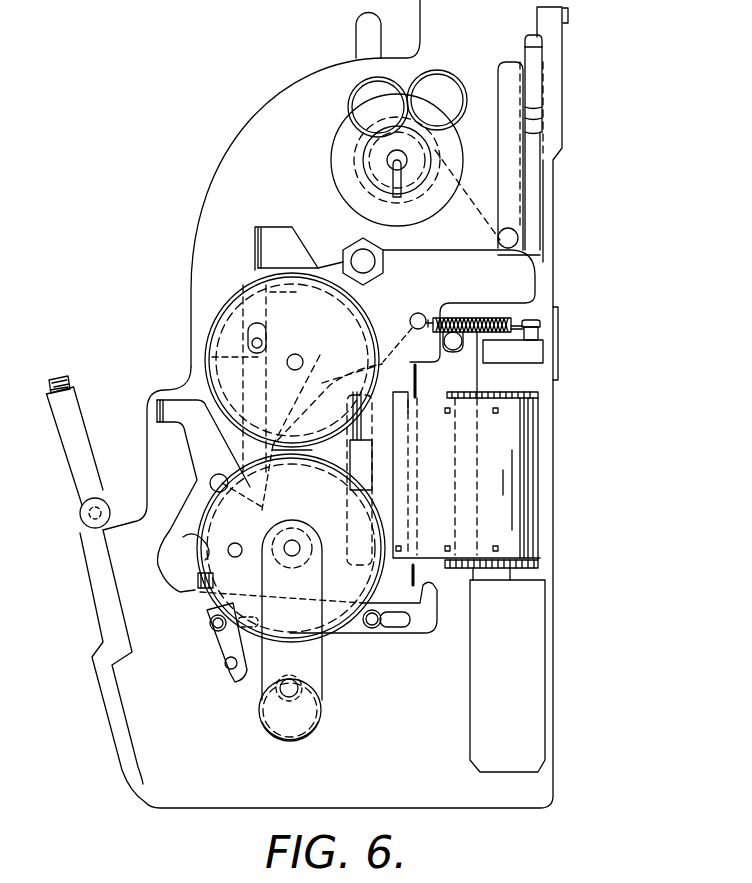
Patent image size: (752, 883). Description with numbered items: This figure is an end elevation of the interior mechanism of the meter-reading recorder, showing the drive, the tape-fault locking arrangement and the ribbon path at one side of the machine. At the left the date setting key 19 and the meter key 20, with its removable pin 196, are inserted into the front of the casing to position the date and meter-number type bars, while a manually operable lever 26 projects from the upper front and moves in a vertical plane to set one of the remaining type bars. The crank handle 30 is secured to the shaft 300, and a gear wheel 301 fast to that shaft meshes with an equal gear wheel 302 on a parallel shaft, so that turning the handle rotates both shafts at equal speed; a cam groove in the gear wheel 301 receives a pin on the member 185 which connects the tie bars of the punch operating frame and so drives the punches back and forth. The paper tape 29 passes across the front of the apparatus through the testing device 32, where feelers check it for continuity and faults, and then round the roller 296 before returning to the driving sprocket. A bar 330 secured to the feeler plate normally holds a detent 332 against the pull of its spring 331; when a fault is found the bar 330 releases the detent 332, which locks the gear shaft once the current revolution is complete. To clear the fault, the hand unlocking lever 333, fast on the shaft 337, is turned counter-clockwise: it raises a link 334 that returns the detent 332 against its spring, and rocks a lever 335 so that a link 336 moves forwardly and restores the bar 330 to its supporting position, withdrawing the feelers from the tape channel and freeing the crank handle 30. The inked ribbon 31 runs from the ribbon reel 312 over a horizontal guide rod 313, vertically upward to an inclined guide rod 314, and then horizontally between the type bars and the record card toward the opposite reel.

The date setting key 19 is at (77, 431).
The meter key 20 is at (70, 380).
The manually operable lever 26 is at (366, 34).
The paper tape 29 is at (512, 530).
The crank handle 30 is at (260, 724).
The inked ribbon 31 is at (462, 190).
The testing device 32 is at (383, 496).
The member 185 is at (323, 350).
The removable pin 196 is at (87, 520).
The roller 296 is at (535, 394).
The shaft 300 is at (292, 546).
The gear wheel 301 is at (328, 636).
The gear wheel 302 is at (208, 320).
The ribbon reel 312 is at (348, 154).
The horizontal guide rod 313 is at (512, 238).
The inclined guide rod 314 is at (535, 117).
The bar 330 is at (416, 380).
The spring 331 is at (510, 320).
The detent 332 is at (270, 240).
The hand unlocking lever 333 is at (195, 440).
The link 334 is at (212, 357).
The lever 335 is at (203, 603).
The link 336 is at (375, 630).
The shaft 337 is at (211, 483).